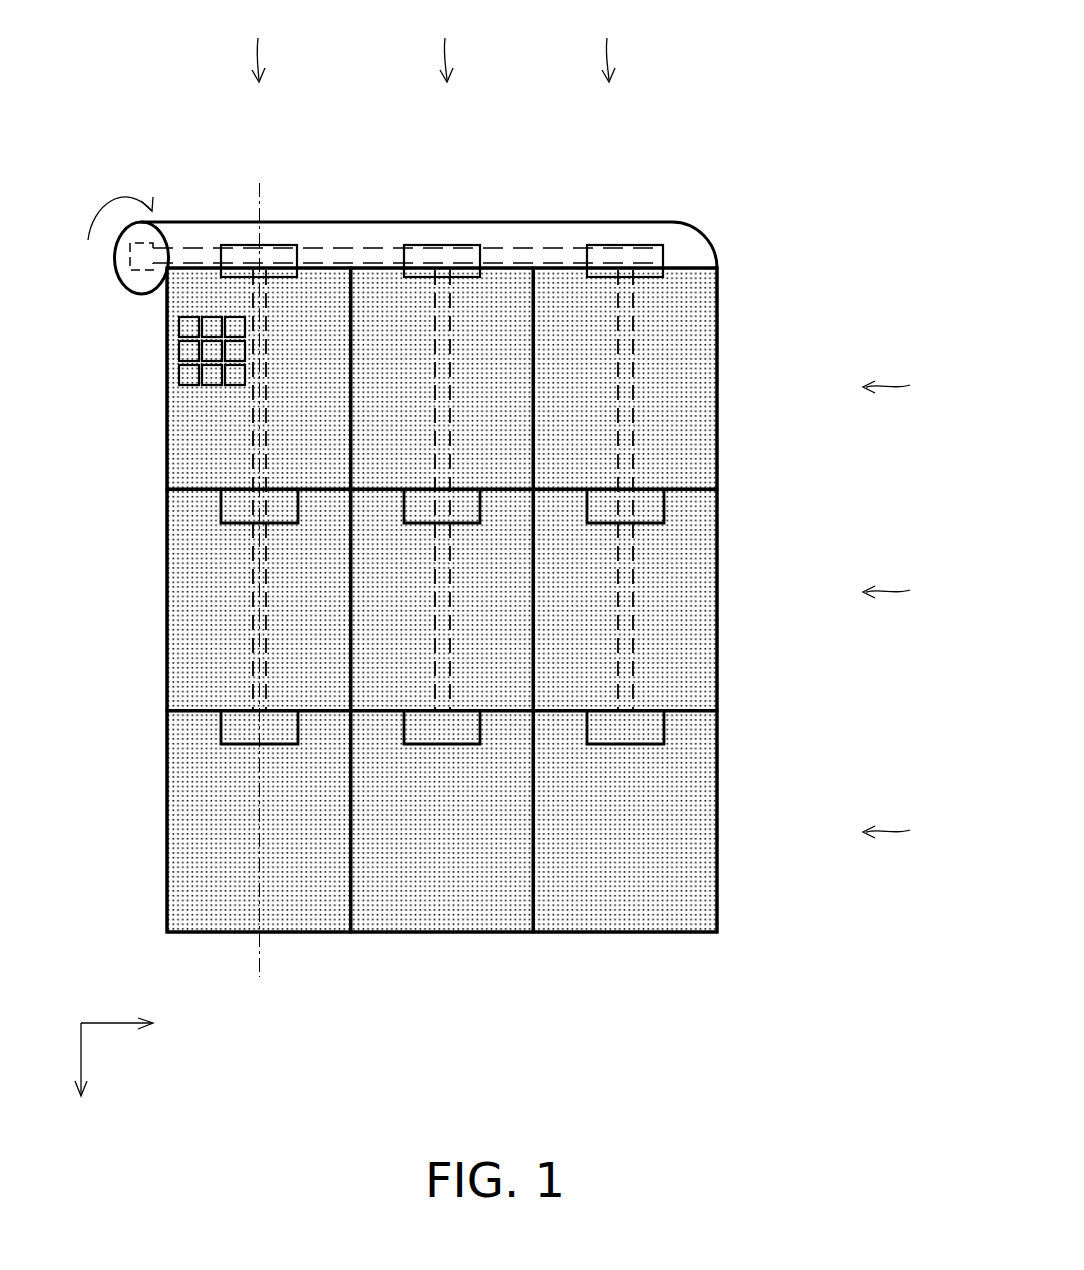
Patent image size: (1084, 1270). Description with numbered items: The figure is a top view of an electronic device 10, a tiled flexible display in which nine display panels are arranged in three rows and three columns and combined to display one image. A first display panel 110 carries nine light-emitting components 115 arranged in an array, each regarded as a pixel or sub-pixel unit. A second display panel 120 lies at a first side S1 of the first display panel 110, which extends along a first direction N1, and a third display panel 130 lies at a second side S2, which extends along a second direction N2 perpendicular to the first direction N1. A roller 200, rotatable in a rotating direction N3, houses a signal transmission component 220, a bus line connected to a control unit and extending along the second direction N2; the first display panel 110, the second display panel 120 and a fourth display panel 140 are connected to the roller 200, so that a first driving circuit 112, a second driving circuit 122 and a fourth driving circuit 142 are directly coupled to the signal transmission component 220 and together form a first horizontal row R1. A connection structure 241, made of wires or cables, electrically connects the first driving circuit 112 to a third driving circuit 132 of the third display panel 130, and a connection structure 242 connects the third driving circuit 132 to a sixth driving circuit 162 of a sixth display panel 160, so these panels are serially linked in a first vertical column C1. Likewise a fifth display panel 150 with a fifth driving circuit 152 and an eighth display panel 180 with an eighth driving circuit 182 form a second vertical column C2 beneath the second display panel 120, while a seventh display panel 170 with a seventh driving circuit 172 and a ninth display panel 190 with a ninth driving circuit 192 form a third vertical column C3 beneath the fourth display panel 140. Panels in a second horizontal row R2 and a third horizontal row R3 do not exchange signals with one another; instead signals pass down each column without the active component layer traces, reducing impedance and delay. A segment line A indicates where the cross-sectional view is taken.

The electronic device 10 is at (787, 1041).
The first display panel 110 is at (178, 305).
The first driving circuit 112 is at (283, 245).
The light-emitting components 115 is at (185, 350).
The second display panel 120 is at (492, 350).
The second driving circuit 122 is at (462, 245).
The third display panel 130 is at (177, 592).
The third driving circuit 132 is at (233, 510).
The fourth display panel 140 is at (707, 313).
The fourth driving circuit 142 is at (636, 242).
The fifth display panel 150 is at (517, 597).
The fifth driving circuit 152 is at (480, 520).
The sixth display panel 160 is at (177, 820).
The sixth driving circuit 162 is at (238, 725).
The seventh display panel 170 is at (707, 697).
The seventh driving circuit 172 is at (657, 507).
The eighth display panel 180 is at (457, 917).
The eighth driving circuit 182 is at (430, 735).
The ninth display panel 190 is at (633, 917).
The ninth driving circuit 192 is at (617, 733).
The roller 200 is at (587, 232).
The signal transmission component 220 is at (193, 252).
The connection structure 241 is at (434, 327).
The connection structure 242 is at (435, 657).
The first side S1 is at (356, 402).
The second side S2 is at (317, 476).
The first horizontal row R1 is at (906, 386).
The second horizontal row R2 is at (906, 589).
The third horizontal row R3 is at (906, 832).
The first vertical column C1 is at (261, 42).
The second vertical column C2 is at (449, 42).
The third vertical column C3 is at (610, 42).
The first direction N1 is at (83, 1077).
The second direction N2 is at (134, 1024).
The rotating direction N3 is at (100, 217).
The segment line A-A' A is at (246, 577).